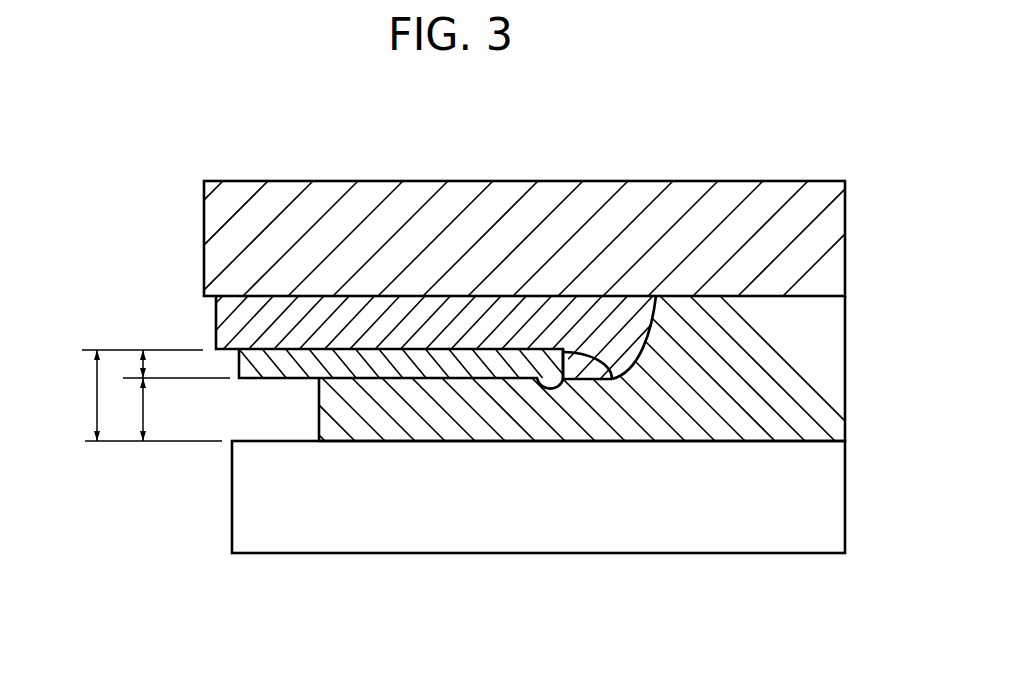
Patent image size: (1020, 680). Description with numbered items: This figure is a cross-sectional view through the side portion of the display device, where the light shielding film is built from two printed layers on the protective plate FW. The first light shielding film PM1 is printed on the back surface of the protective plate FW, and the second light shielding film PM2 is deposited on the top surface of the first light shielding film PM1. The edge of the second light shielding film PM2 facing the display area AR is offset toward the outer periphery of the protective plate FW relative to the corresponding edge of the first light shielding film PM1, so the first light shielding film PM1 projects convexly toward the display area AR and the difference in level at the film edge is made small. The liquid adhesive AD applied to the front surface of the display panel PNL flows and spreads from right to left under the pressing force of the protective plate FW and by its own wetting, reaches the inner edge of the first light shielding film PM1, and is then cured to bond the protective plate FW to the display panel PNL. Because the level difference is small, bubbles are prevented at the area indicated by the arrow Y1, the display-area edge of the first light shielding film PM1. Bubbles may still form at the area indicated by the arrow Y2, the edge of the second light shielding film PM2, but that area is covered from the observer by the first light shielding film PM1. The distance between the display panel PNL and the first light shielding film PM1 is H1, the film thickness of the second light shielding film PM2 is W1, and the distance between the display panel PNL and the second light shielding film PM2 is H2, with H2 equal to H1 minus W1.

The protective plate FW is at (553, 193).
The display area AR is at (845, 142).
The first light shielding film PM1 is at (228, 313).
The second light shielding film PM2 is at (264, 370).
The adhesive AD is at (393, 430).
The display panel PNL is at (300, 532).
The film thickness of the second light shielding film W1 is at (142, 353).
The distance between the first light shielding film and the display panel H1 is at (140, 395).
The distance between the display panel and the second light shielding film H2 is at (125, 409).
The arrow Y1 is at (663, 330).
The arrow Y2 is at (581, 389).